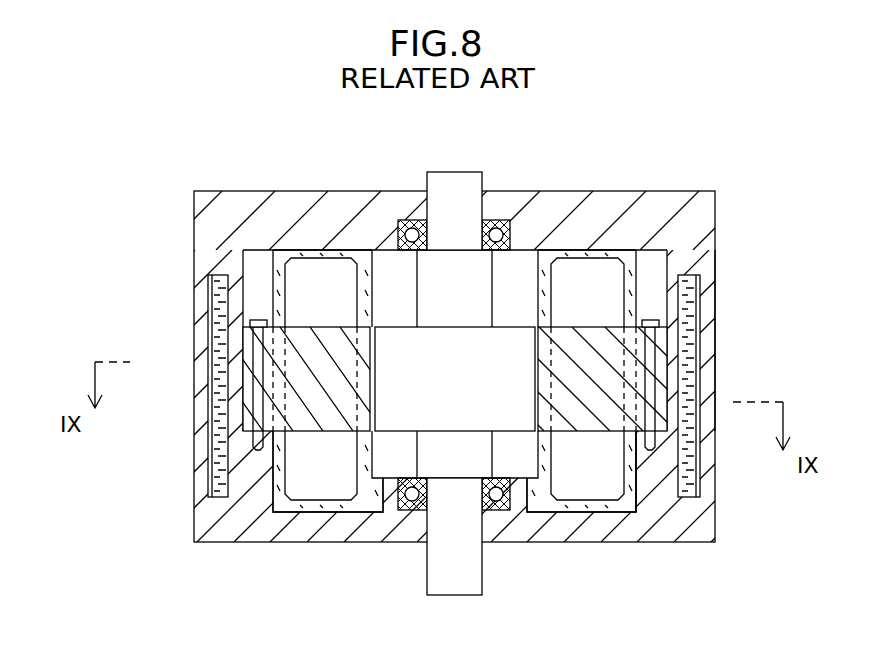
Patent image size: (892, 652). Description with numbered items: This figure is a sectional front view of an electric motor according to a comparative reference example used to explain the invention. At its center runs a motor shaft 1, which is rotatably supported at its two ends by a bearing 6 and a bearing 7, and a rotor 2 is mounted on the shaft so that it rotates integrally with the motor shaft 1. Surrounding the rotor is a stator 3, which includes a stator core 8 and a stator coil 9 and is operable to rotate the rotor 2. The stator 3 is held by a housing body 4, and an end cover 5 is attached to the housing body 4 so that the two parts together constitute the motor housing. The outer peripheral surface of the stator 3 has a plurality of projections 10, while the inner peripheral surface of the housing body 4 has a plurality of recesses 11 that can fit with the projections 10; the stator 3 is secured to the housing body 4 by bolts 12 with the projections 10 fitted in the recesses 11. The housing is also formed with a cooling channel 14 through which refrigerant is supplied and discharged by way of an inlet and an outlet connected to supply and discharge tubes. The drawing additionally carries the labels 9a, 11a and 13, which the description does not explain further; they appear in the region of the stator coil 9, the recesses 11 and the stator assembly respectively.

The motor shaft 1 is at (437, 172).
The rotor 2 is at (513, 327).
The stator 3 is at (432, 421).
The housing body 4 is at (715, 442).
The end cover 5 is at (364, 191).
The bearing 6 is at (496, 220).
The bearing 7 is at (498, 512).
The stator core 8 is at (290, 463).
The stator coil 9 is at (265, 388).
The coil winding 9a is at (313, 490).
The projections 10 is at (250, 348).
The recesses 11 is at (252, 291).
The bolt hole 11a is at (640, 424).
The bolts 12 is at (263, 352).
The bobbin 13 is at (365, 503).
The cooling channel 14 is at (698, 305).